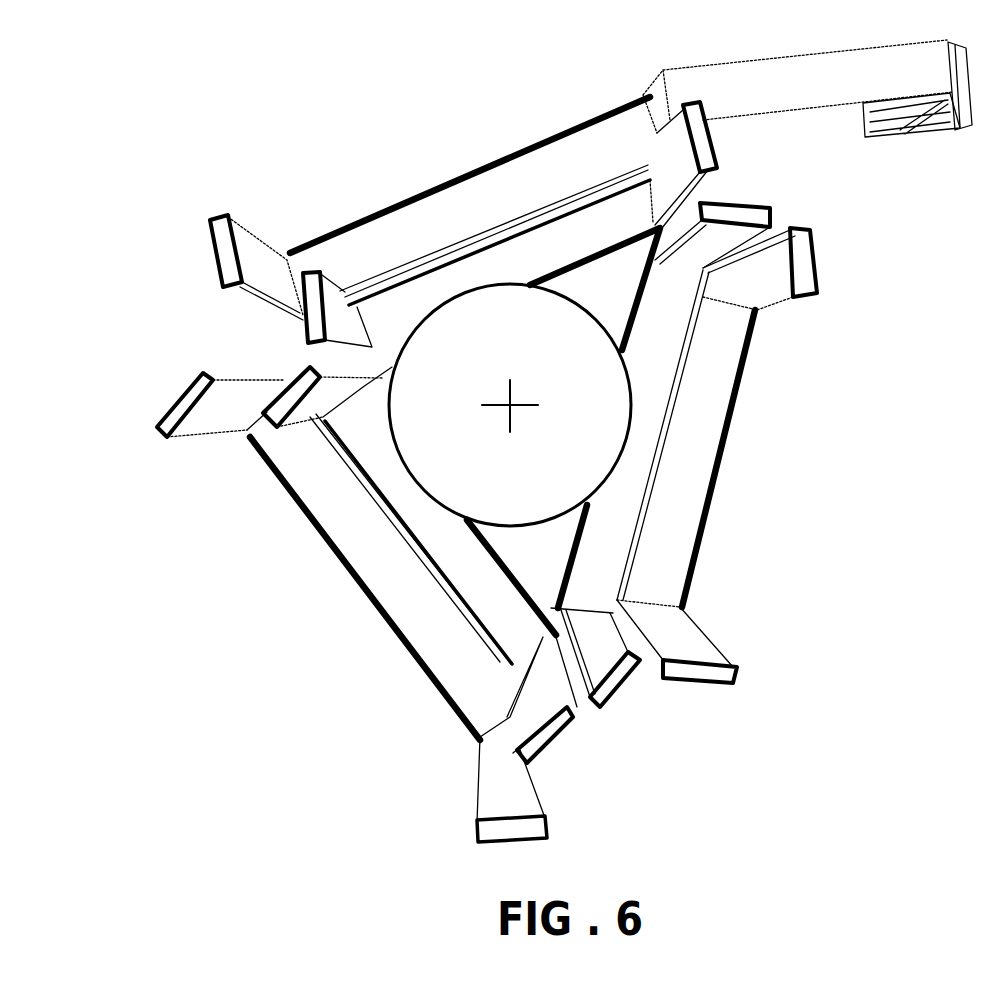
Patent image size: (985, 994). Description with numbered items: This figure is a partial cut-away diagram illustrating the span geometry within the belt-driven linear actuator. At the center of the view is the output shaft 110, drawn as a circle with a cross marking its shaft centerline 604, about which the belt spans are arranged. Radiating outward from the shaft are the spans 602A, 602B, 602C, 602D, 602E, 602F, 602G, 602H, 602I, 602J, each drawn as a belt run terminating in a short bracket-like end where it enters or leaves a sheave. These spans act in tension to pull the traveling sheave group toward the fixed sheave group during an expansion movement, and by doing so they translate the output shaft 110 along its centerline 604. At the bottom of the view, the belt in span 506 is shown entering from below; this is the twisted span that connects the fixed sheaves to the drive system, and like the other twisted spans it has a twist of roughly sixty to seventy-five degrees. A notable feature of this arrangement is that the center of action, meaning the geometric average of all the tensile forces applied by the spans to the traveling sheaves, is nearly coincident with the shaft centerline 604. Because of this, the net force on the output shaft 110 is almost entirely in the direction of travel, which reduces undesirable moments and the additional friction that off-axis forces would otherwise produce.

The output shaft 110 is at (487, 307).
The shaft centerline 604 is at (505, 412).
The belt in span 506 is at (500, 755).
The span 602A is at (222, 250).
The span 602B is at (307, 335).
The span 602C is at (163, 423).
The span 602D is at (280, 412).
The span 602E is at (560, 723).
The span 602F is at (615, 672).
The span 602G is at (713, 670).
The span 602H is at (810, 283).
The span 602I is at (758, 212).
The span 602J is at (697, 125).